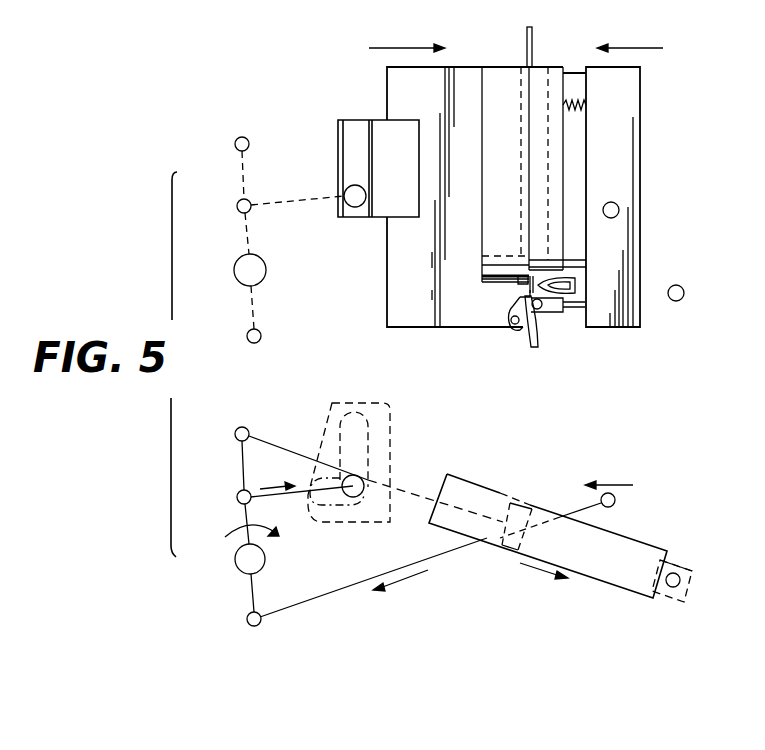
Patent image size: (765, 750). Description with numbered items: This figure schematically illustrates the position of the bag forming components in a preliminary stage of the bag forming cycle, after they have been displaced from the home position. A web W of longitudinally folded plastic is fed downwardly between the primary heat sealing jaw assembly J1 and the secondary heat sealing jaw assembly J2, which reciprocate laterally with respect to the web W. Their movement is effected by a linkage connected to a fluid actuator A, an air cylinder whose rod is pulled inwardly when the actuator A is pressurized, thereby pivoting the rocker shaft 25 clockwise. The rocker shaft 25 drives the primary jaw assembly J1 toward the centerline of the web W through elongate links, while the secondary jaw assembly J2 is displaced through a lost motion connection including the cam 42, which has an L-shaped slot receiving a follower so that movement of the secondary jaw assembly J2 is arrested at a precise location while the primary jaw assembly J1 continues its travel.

The rocker shaft 25 is at (258, 275).
The cam 42 is at (383, 440).
The primary heat sealing jaw assembly J1 is at (622, 117).
The secondary heat sealing jaw assembly J2 is at (465, 78).
The web W is at (534, 44).
The fluid actuator A is at (633, 540).